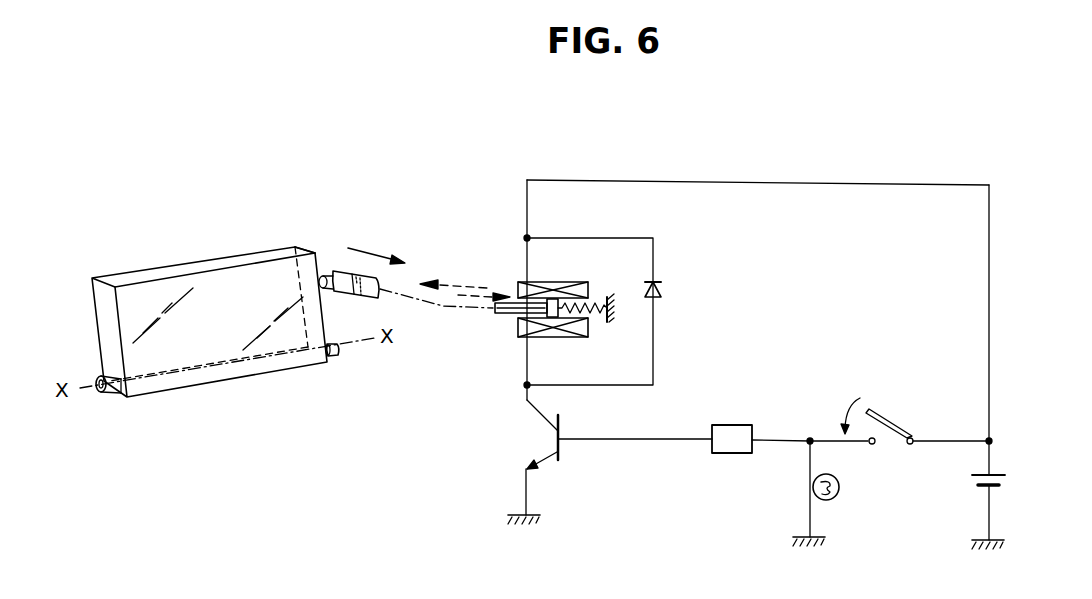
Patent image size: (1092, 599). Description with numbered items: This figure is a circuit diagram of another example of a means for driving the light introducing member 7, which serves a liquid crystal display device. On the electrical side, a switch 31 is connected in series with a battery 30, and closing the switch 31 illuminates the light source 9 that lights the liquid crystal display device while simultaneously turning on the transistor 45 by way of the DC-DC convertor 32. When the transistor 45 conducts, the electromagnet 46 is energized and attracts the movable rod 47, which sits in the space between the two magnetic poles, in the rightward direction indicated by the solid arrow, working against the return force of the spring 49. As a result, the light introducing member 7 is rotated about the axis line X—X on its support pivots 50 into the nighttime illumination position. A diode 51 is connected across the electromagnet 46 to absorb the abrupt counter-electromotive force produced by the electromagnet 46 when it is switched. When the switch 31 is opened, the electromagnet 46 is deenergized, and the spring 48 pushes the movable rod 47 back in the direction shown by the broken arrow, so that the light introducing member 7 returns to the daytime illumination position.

The light introducing member 7 is at (250, 282).
The spring 49 is at (338, 288).
The support pivots 50 is at (331, 358).
The electromagnet 46 is at (517, 283).
The movable rod 47 is at (505, 313).
The spring 48 is at (598, 300).
The diode 51 is at (662, 291).
The transistor 45 is at (548, 440).
The DC-DC convertor 32 is at (728, 428).
The switch 31 is at (897, 423).
The light source 9 is at (840, 490).
The battery 30 is at (1004, 481).